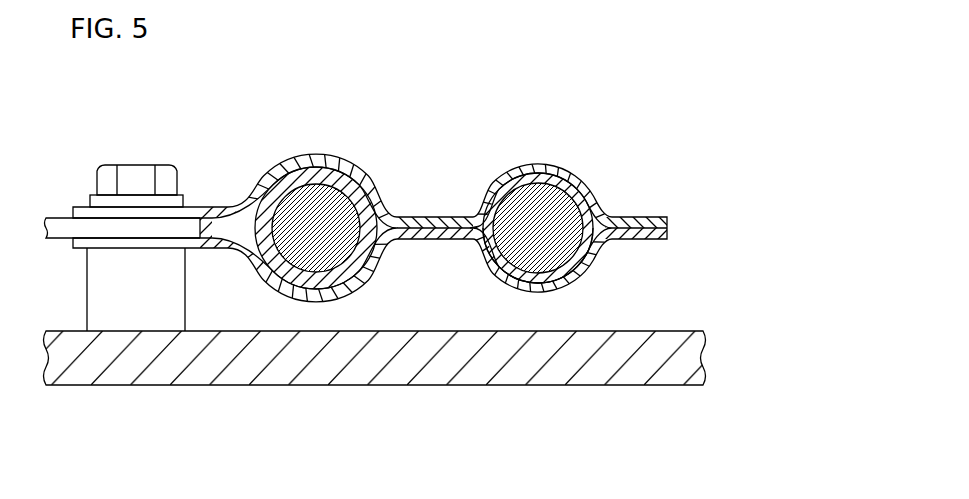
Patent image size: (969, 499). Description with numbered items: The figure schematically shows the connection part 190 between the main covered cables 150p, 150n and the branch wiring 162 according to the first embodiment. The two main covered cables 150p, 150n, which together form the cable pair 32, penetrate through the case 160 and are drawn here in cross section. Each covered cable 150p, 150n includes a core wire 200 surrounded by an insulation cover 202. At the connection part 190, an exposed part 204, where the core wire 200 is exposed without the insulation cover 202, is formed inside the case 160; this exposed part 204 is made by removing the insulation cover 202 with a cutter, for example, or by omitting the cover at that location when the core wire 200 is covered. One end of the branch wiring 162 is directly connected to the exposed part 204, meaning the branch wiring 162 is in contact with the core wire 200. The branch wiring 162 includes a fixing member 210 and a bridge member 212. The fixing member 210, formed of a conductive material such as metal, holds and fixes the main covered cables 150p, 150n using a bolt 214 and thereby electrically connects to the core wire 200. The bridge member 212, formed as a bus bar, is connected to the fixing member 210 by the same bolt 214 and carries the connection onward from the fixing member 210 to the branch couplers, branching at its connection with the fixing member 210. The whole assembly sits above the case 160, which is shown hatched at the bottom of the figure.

The cable pair (power cables) 32 is at (424, 239).
The main covered cable 150n is at (278, 105).
The main covered cable 150p is at (503, 105).
The core wire 200 is at (532, 193).
The insulation cover 202 is at (567, 170).
The exposed part 204 is at (550, 273).
The connection part 190 is at (600, 184).
The bolt 214 is at (135, 178).
The bridge member 212 is at (140, 228).
The fixing member 210 is at (222, 250).
The branch wiring 162 is at (144, 299).
The case 160 is at (430, 375).